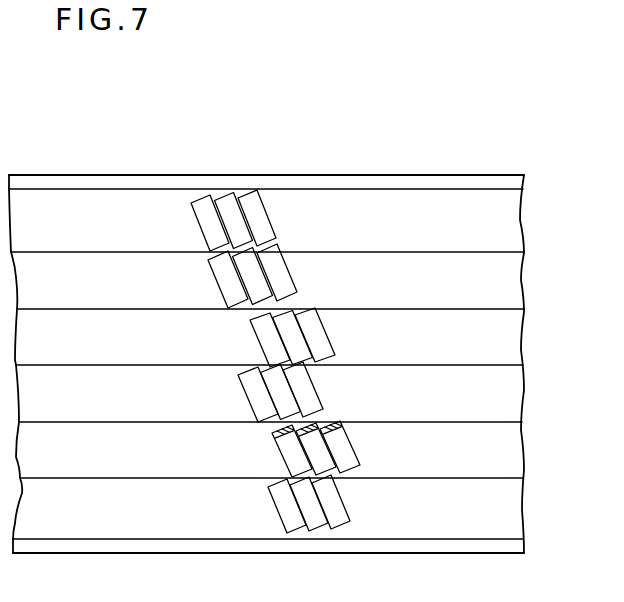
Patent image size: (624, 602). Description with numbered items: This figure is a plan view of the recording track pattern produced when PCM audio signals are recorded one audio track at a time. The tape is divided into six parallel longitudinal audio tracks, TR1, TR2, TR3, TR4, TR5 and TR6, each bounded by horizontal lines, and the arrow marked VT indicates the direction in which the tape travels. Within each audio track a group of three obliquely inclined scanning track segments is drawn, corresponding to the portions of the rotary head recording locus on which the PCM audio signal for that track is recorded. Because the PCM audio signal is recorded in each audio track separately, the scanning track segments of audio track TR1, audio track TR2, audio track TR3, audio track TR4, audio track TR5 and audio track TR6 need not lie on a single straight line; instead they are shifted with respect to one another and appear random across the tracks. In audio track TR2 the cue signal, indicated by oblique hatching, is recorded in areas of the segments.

The audio track TR1 is at (427, 504).
The audio track TR2 is at (429, 449).
The audio track TR3 is at (412, 392).
The audio track TR4 is at (418, 337).
The audio track TR5 is at (397, 276).
The audio track TR6 is at (388, 220).
The tape velocity VT is at (412, 146).